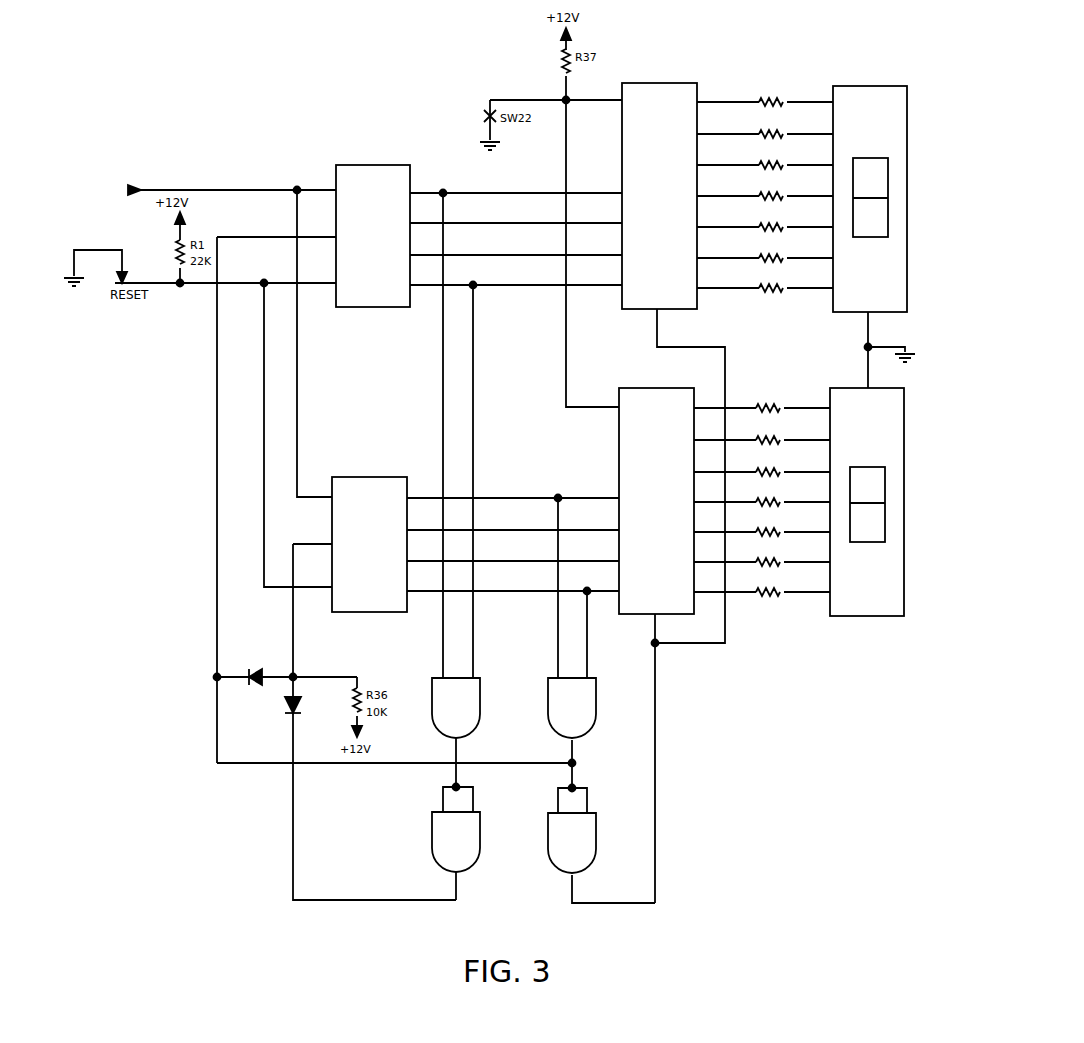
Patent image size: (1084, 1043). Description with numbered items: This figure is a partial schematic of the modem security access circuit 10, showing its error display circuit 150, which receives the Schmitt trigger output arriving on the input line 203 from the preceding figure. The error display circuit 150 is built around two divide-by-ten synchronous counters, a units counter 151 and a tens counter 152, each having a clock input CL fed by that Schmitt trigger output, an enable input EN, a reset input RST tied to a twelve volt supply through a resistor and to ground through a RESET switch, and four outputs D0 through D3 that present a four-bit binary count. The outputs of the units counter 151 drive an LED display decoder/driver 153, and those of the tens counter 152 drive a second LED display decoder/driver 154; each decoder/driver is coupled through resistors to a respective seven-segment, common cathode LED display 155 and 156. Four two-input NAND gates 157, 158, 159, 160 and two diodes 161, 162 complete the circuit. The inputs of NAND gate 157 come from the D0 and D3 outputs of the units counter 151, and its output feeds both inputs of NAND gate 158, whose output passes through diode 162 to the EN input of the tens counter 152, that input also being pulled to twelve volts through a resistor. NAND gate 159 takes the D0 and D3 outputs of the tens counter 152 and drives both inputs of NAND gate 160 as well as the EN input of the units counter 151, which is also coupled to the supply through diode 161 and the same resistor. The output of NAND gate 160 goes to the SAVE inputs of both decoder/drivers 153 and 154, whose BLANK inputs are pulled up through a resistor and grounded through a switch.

The apparatus 10 is at (811, 843).
The error display circuit 150 is at (337, 97).
The units counter 151 is at (412, 173).
The tens counter 152 is at (397, 475).
The LED display decoder/driver 153 is at (690, 83).
The LED display decoder/driver 154 is at (628, 386).
The seven-segment common cathode LED display 155 is at (908, 115).
The seven-segment common cathode LED display 156 is at (905, 425).
The NAND gate 157 is at (481, 706).
The NAND gate 158 is at (481, 850).
The NAND gate 159 is at (598, 706).
The NAND gate 160 is at (598, 848).
The diode 161 is at (253, 671).
The diode 162 is at (286, 713).
The input line from FIG. 2 203 is at (231, 187).